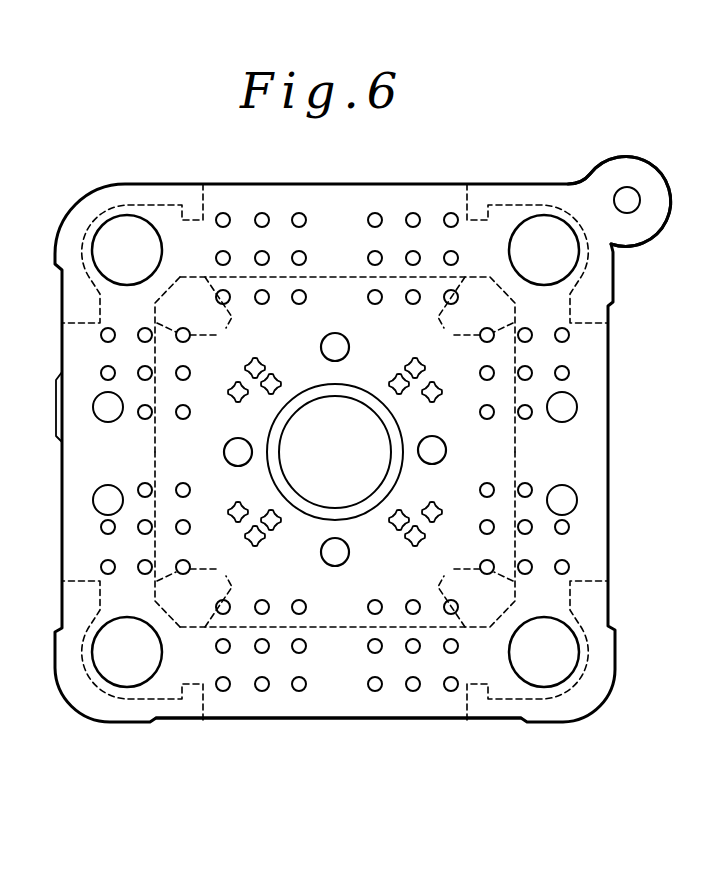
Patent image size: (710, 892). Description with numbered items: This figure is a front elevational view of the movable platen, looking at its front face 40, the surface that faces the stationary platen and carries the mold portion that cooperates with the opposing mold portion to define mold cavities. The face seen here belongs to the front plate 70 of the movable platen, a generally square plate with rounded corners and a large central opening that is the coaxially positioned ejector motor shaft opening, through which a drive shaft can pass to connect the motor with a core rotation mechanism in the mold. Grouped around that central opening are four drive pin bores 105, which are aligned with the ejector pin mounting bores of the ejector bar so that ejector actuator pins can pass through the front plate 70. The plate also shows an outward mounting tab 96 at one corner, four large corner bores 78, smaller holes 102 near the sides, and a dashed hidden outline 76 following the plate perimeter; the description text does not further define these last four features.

The front face 40 is at (352, 714).
The front plate 70 is at (350, 202).
The gasket outline 76 is at (122, 186).
The mounting hole 78 is at (93, 259).
The mounting tab 96 is at (608, 160).
The small hole 102 is at (101, 338).
The drive pin bores 105 is at (336, 333).